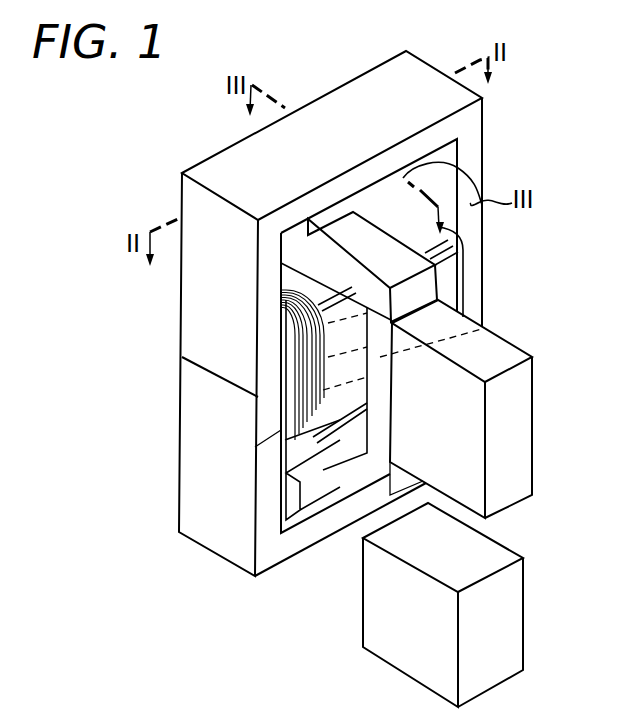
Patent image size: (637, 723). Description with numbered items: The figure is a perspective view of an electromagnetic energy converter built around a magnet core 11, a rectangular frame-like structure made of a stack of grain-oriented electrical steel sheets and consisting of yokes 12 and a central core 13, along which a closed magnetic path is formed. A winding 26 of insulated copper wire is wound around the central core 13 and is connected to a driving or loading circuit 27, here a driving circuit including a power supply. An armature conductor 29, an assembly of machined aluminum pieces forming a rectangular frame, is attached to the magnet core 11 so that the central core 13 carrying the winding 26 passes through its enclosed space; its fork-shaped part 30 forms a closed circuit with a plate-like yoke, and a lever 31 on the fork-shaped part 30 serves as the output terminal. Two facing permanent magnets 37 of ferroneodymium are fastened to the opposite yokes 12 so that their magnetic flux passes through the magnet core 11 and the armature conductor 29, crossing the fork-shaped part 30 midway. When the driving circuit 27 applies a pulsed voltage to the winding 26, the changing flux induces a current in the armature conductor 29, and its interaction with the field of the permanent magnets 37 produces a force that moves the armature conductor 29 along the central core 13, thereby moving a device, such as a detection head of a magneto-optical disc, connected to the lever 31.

The magnet core 11 is at (351, 313).
The yokes 12 is at (222, 165).
The central core 13 is at (485, 328).
The winding 26 is at (287, 420).
The driving or loading circuit 27 is at (400, 643).
The armature conductor 29 is at (463, 365).
The fork-shaped part 30 is at (468, 262).
The lever 31 is at (518, 432).
The permanent magnets 37 is at (457, 168).